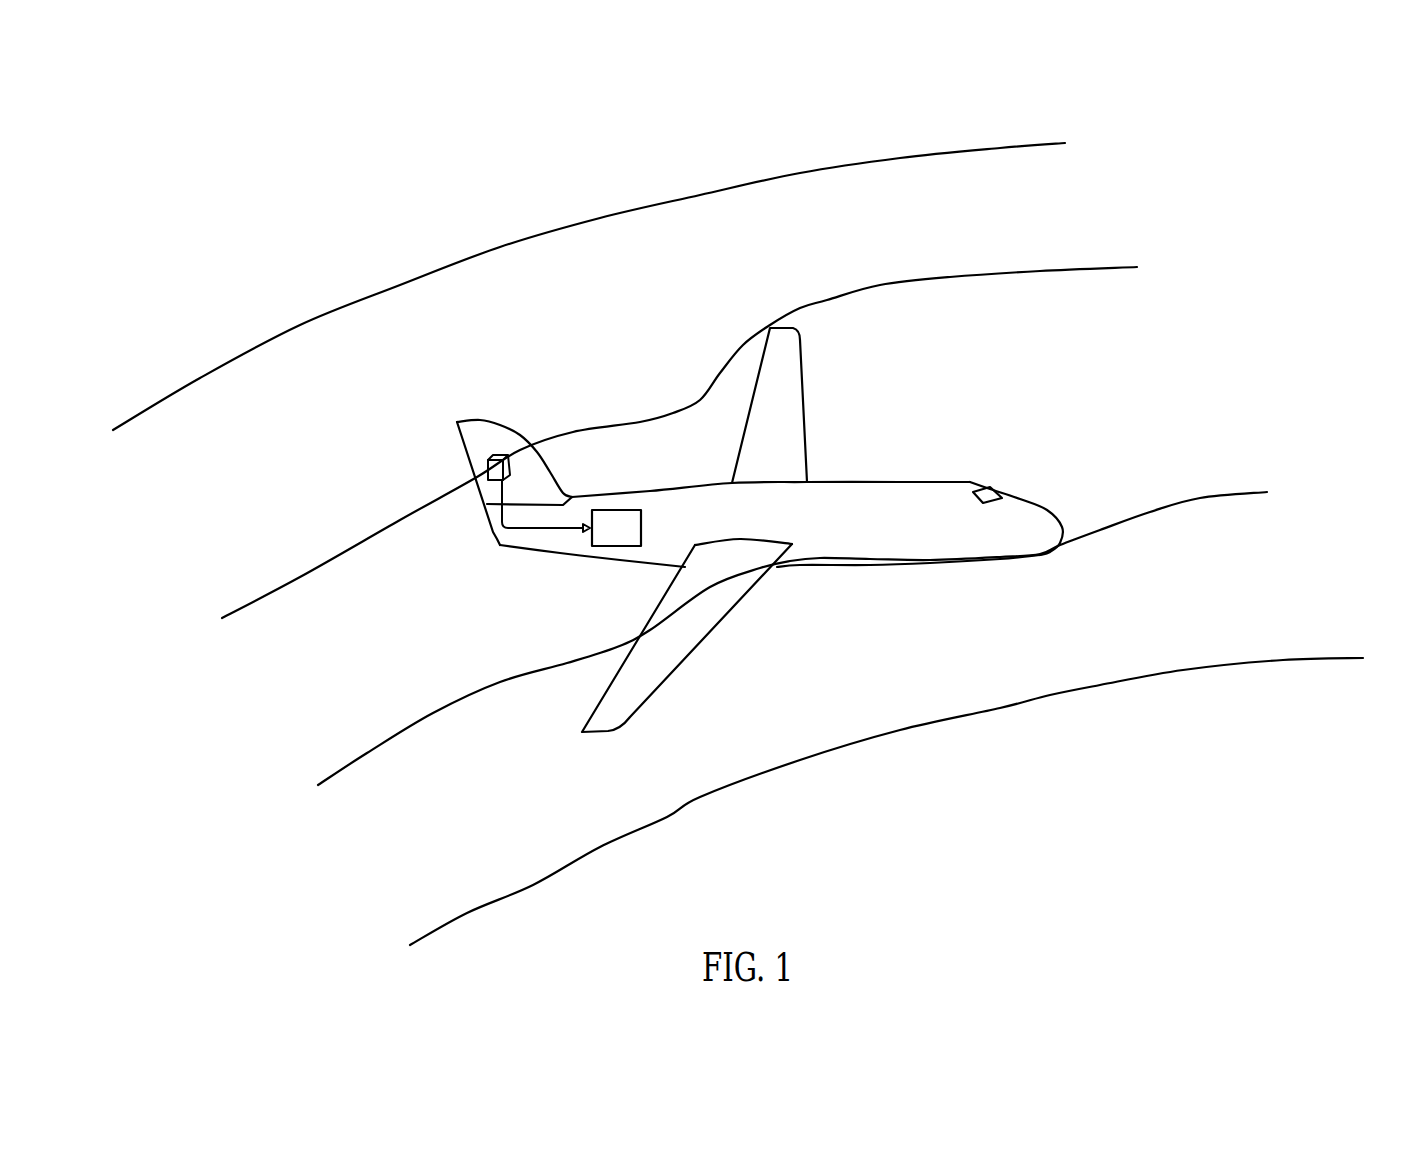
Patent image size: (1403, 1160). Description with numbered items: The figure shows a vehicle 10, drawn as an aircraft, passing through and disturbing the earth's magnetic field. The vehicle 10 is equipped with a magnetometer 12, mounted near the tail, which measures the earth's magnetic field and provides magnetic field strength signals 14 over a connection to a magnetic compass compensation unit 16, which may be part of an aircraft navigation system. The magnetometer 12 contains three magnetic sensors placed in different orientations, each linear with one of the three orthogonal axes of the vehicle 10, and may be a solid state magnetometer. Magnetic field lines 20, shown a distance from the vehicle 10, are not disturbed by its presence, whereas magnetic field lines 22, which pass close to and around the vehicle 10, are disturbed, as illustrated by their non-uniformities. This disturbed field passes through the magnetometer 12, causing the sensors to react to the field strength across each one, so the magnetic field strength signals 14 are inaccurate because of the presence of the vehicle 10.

The vehicle 10 is at (990, 558).
The magnetometer 12 is at (492, 460).
The magnetic field strength signals 14 is at (534, 529).
The magnetic compass compensation unit 16 is at (641, 516).
The magnetic field lines 20 is at (1005, 148).
The magnetic field lines 22 is at (1073, 272).